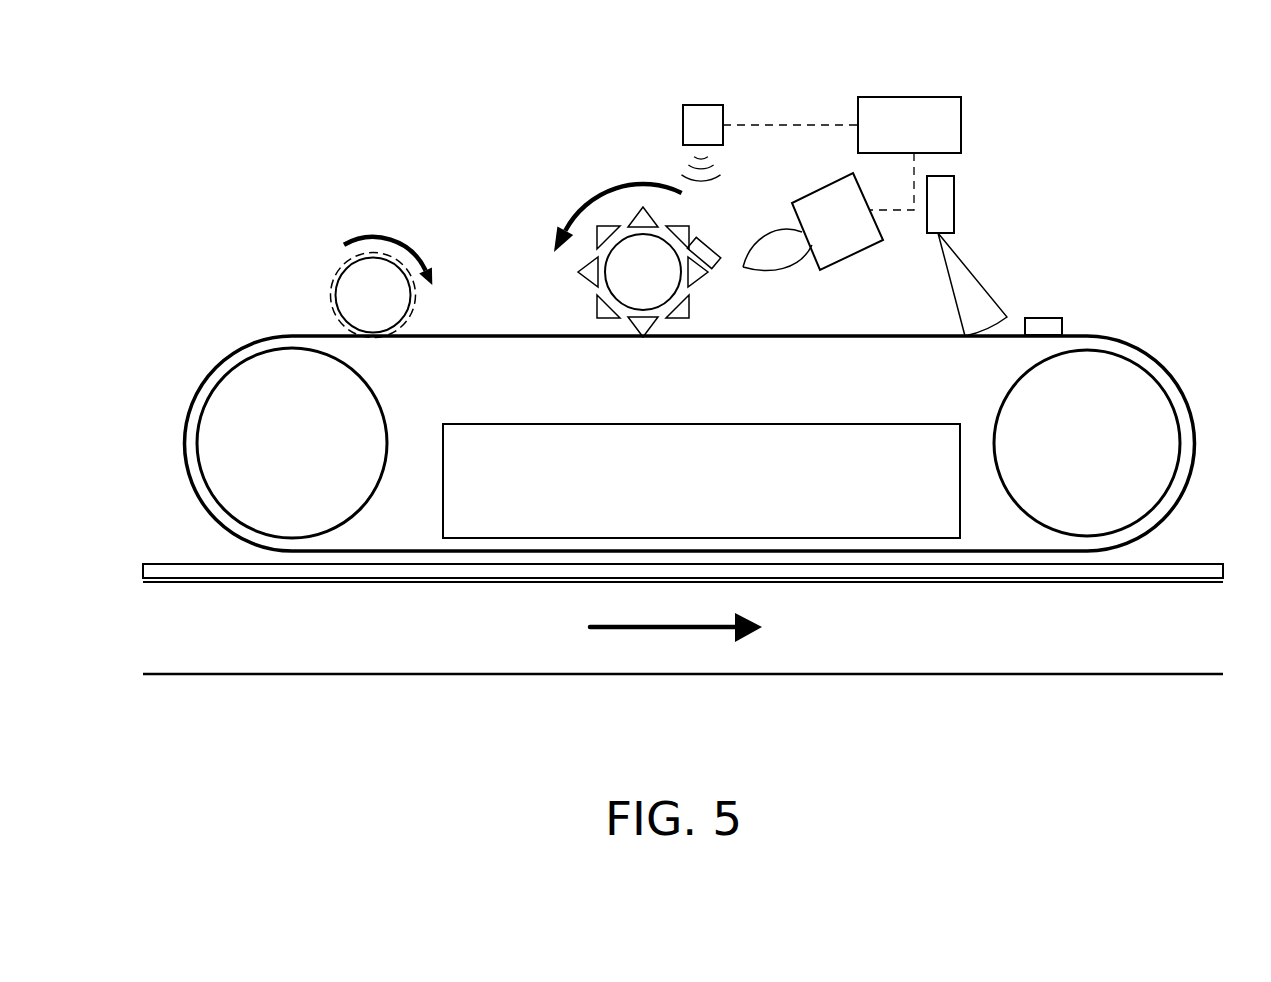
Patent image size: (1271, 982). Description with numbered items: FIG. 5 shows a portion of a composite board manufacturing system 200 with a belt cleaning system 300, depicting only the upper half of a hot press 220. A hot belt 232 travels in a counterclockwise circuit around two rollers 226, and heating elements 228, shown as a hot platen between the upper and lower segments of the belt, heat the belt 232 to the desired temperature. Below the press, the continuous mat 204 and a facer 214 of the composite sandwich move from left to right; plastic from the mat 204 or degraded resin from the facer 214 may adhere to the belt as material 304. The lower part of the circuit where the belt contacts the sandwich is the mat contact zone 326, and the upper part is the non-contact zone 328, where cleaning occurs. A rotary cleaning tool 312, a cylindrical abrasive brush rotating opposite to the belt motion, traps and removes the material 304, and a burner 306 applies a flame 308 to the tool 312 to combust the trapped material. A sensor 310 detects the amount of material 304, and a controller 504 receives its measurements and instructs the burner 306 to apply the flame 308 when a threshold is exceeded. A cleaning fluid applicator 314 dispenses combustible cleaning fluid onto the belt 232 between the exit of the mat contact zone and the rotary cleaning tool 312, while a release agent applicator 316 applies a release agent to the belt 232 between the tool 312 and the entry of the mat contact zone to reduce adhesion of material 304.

The composite board manufacturing system 200 is at (210, 63).
The continuous mat 204 is at (260, 676).
The facer 214 is at (157, 564).
The hot press 220 is at (276, 283).
The rollers 226 is at (213, 500).
The heating elements 228 is at (540, 538).
The hot belt 232 is at (216, 372).
The belt cleaning system 300 is at (462, 101).
The material 304 is at (712, 246).
The burner 306 is at (848, 178).
The flame 308 is at (764, 269).
The sensor 310 is at (697, 105).
The rotary cleaning tool 312 is at (588, 283).
The cleaning fluid applicator 314 is at (955, 196).
The release agent applicator 316 is at (348, 262).
The mat contact zone 326 is at (836, 617).
The non-contact zone 328 is at (1080, 234).
The controller 504 is at (908, 97).